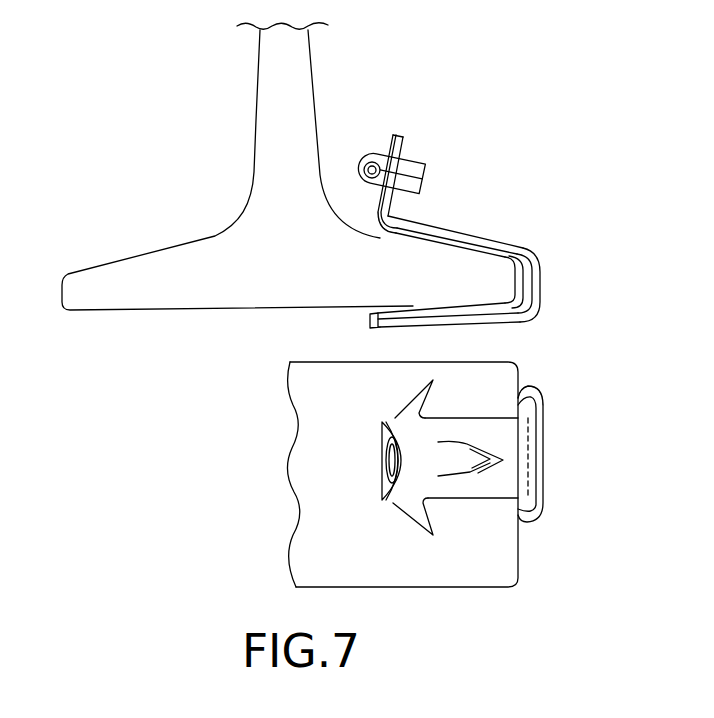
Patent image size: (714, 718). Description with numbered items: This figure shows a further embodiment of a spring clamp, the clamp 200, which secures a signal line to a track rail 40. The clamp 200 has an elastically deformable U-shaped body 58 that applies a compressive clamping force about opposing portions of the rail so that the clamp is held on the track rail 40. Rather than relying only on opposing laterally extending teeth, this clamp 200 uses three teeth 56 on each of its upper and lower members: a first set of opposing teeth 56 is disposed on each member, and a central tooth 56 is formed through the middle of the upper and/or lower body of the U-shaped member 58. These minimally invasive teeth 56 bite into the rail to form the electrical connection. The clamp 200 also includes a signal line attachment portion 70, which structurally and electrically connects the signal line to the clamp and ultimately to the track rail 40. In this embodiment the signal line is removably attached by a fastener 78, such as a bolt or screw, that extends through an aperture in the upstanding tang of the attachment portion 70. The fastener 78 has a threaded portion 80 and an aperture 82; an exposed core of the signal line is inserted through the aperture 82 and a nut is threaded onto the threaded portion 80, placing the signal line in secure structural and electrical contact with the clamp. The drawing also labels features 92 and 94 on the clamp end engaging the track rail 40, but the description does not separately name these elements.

The track rail 40 is at (105, 304).
The teeth 56 is at (405, 399).
The U-shaped body 58 is at (535, 318).
The signal line attachment portion 70 is at (399, 133).
The fastener 78 is at (398, 200).
The threaded portion 80 is at (420, 165).
The aperture 82 is at (377, 160).
The hook end 92 is at (520, 278).
The tab 94 is at (532, 389).
The clamp 200 is at (475, 210).